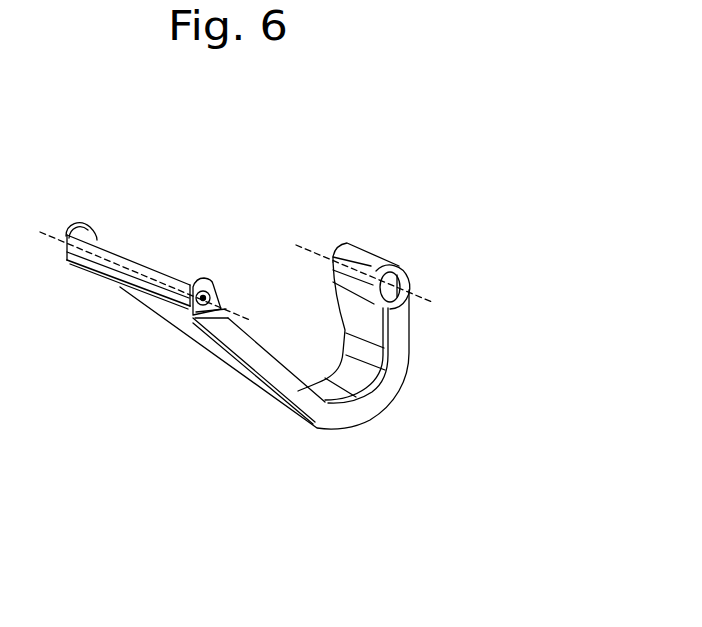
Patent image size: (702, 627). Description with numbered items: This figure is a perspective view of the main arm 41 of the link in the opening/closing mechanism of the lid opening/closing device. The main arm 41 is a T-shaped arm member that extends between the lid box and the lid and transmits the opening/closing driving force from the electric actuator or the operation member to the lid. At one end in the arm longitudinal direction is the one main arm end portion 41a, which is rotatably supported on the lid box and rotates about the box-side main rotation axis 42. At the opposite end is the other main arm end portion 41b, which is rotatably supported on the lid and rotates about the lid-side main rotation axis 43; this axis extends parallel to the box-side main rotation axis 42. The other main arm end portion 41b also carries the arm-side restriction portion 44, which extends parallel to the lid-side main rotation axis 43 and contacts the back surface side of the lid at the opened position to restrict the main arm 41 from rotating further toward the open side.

The main arm 41 is at (328, 415).
The one main arm end portion 41a is at (368, 260).
The other main arm end portion 41b is at (107, 243).
The box-side main rotation axis 42 is at (432, 302).
The lid-side main rotation axis 43 is at (249, 321).
The arm-side restriction portion 44 is at (118, 287).